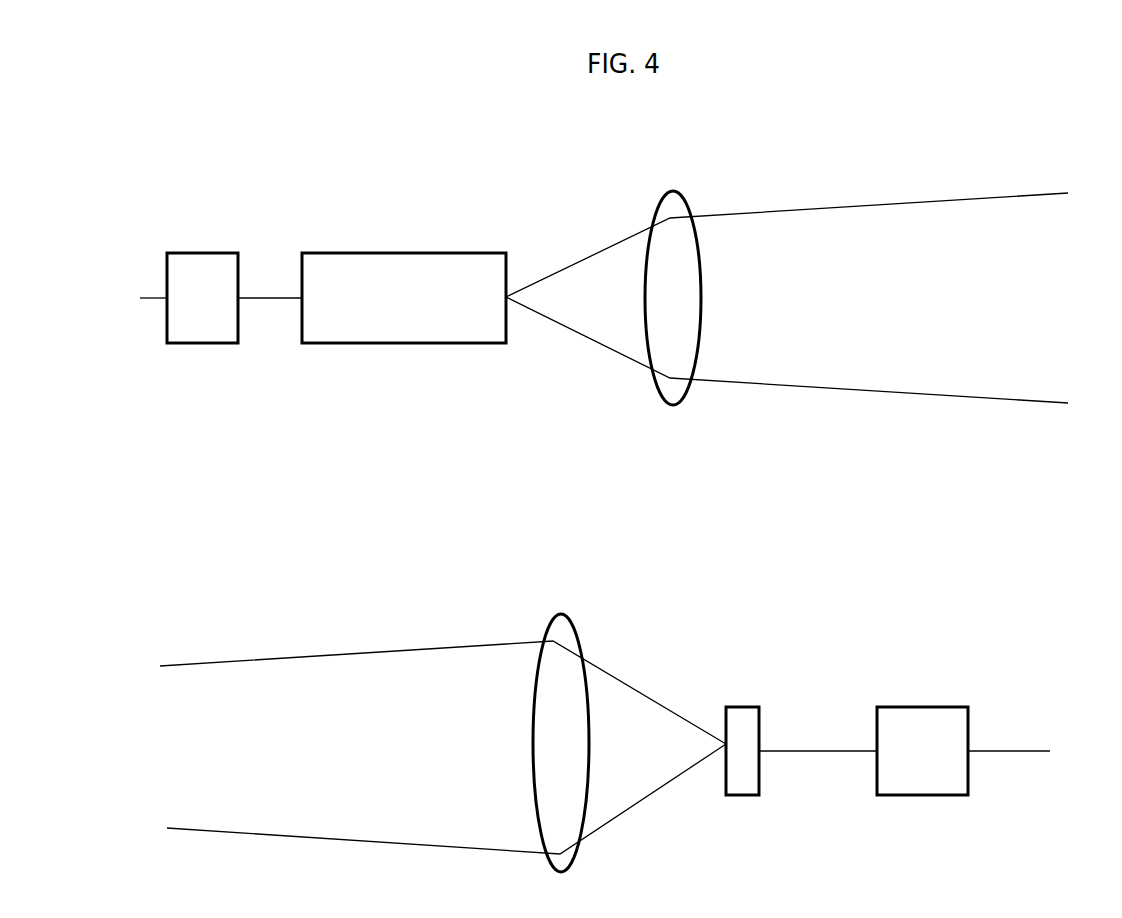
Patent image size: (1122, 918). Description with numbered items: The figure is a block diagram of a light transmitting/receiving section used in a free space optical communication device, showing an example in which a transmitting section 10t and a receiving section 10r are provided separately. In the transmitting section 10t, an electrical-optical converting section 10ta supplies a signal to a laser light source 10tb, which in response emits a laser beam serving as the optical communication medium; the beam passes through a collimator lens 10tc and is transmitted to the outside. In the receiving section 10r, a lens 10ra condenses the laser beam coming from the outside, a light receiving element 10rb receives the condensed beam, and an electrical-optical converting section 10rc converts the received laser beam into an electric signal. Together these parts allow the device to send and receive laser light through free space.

The transmitting section 10t is at (790, 185).
The electrical-optical converting section 10ta is at (222, 253).
The laser light source 10tb is at (494, 253).
The collimator lens 10tc is at (678, 194).
The receiving section 10r is at (1098, 583).
The lens 10ra is at (571, 620).
The light receiving element 10rb is at (753, 707).
The electrical-optical converting section 10rc is at (943, 707).